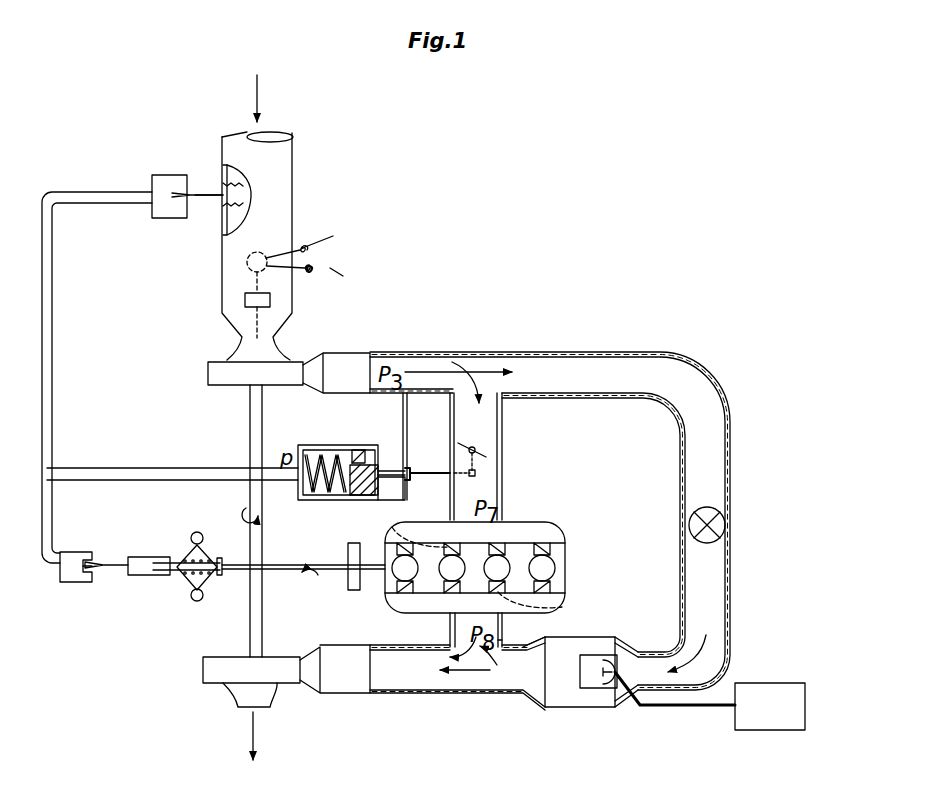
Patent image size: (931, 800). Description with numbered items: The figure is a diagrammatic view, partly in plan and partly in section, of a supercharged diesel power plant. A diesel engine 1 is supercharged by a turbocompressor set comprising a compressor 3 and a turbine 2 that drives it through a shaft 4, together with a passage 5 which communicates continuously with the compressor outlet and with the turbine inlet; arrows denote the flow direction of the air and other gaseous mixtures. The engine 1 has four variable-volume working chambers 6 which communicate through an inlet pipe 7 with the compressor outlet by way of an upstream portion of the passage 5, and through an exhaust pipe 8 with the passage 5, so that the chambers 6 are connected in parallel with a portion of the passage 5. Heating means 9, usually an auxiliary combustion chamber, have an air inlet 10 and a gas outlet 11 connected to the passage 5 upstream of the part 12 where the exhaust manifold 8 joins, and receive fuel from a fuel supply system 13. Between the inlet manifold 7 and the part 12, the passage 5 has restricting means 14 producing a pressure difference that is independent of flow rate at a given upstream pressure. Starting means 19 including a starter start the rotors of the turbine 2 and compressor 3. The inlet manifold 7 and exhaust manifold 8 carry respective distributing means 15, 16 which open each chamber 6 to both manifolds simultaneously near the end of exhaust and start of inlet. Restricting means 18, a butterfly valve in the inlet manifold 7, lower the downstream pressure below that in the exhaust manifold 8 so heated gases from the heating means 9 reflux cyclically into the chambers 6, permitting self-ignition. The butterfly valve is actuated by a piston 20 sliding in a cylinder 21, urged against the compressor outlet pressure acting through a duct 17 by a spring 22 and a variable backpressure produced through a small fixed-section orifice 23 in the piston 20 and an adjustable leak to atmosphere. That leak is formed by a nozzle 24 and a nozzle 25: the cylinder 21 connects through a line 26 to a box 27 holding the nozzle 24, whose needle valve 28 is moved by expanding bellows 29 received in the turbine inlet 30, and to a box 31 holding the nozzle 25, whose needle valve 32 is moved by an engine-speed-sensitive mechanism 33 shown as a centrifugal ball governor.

The diesel engine 1 is at (568, 570).
The turbine 2 is at (203, 670).
The compressor 3 is at (208, 372).
The shaft 4 is at (250, 438).
The passage 5 is at (730, 415).
The variable-volume working chambers 6 is at (452, 568).
The inlet pipe 7 is at (502, 430).
The exhaust pipe 8 is at (450, 628).
The heating means 9 is at (560, 707).
The air inlet 10 is at (645, 665).
The gas outlet 11 is at (520, 680).
The part of the passage 12 is at (500, 645).
The fuel supply system 13 is at (775, 726).
The restricting means 14 is at (727, 525).
The distributing means 15 is at (425, 530).
The distributing means 16 is at (556, 600).
The duct 17 is at (409, 420).
The restricting means 18 is at (480, 452).
The starting means 19 is at (244, 297).
The piston 20 is at (349, 556).
The cylinder 21 is at (340, 452).
The spring 22 is at (352, 500).
The small fixed-section orifice 23 is at (363, 452).
The nozzle 24 is at (188, 190).
The nozzle 25 is at (100, 576).
The line 26 is at (92, 470).
The box 27 is at (155, 176).
The needle valve 28 is at (196, 205).
The expanding bellows 29 is at (224, 170).
The turbine inlet 30 is at (292, 182).
The box 31 is at (72, 584).
The needle valve 32 is at (93, 558).
The engine-speed-sensitive mechanism 33 is at (176, 592).